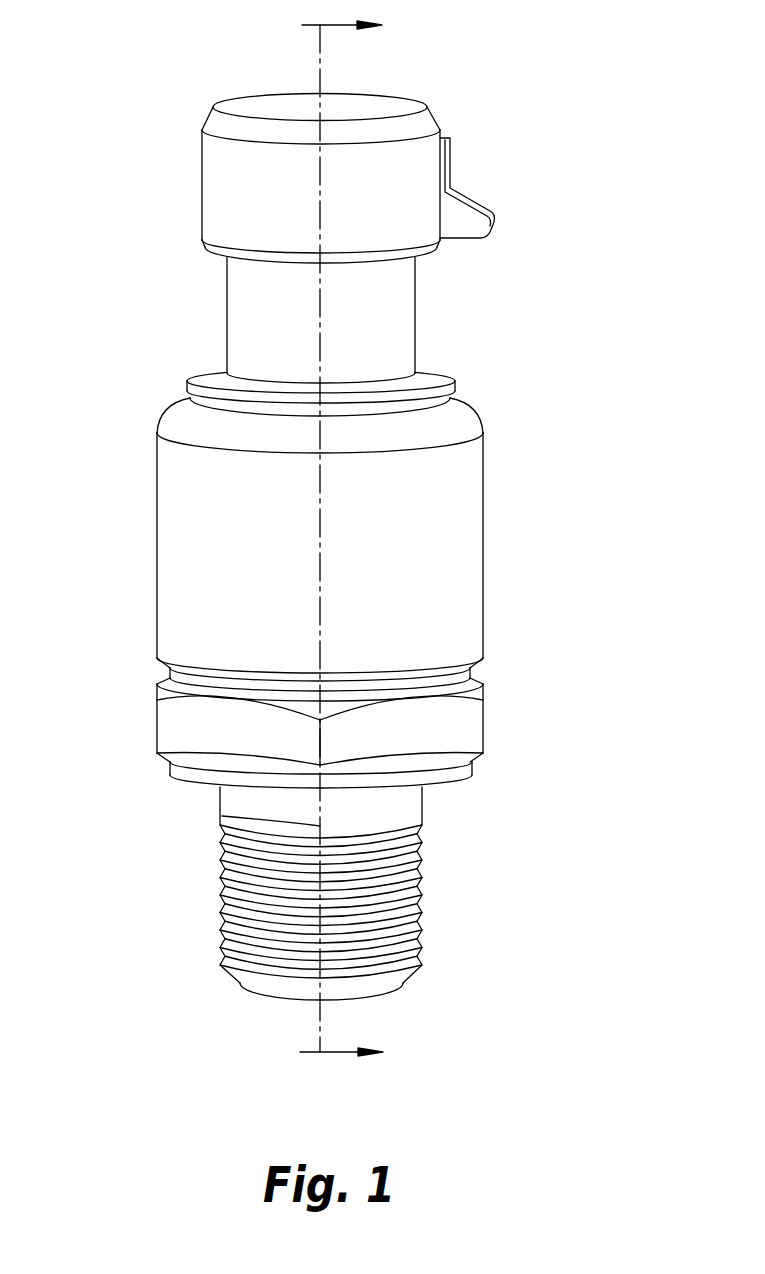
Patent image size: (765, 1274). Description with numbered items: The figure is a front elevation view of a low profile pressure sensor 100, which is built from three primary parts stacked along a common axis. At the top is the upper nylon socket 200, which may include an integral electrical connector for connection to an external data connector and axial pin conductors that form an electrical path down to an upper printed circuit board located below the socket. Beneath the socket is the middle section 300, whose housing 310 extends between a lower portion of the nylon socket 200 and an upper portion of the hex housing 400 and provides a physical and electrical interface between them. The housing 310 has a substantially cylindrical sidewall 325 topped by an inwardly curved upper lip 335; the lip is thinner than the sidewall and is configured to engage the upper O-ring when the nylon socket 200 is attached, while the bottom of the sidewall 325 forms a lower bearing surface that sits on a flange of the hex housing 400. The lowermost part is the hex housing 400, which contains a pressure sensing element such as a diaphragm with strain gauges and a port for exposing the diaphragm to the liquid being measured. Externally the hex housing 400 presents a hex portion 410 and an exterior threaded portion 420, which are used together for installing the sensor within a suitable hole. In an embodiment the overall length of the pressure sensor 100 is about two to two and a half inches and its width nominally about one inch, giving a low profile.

The low profile pressure sensor 100 is at (369, 541).
The upper nylon socket 200 is at (198, 105).
The middle section 300 is at (332, 525).
The housing 310 is at (483, 492).
The sidewall 325 is at (463, 580).
The inwardly curved upper lip 335 is at (461, 432).
The hex housing 400 is at (341, 834).
The hex portion 410 is at (469, 747).
The threaded portion 420 is at (420, 872).